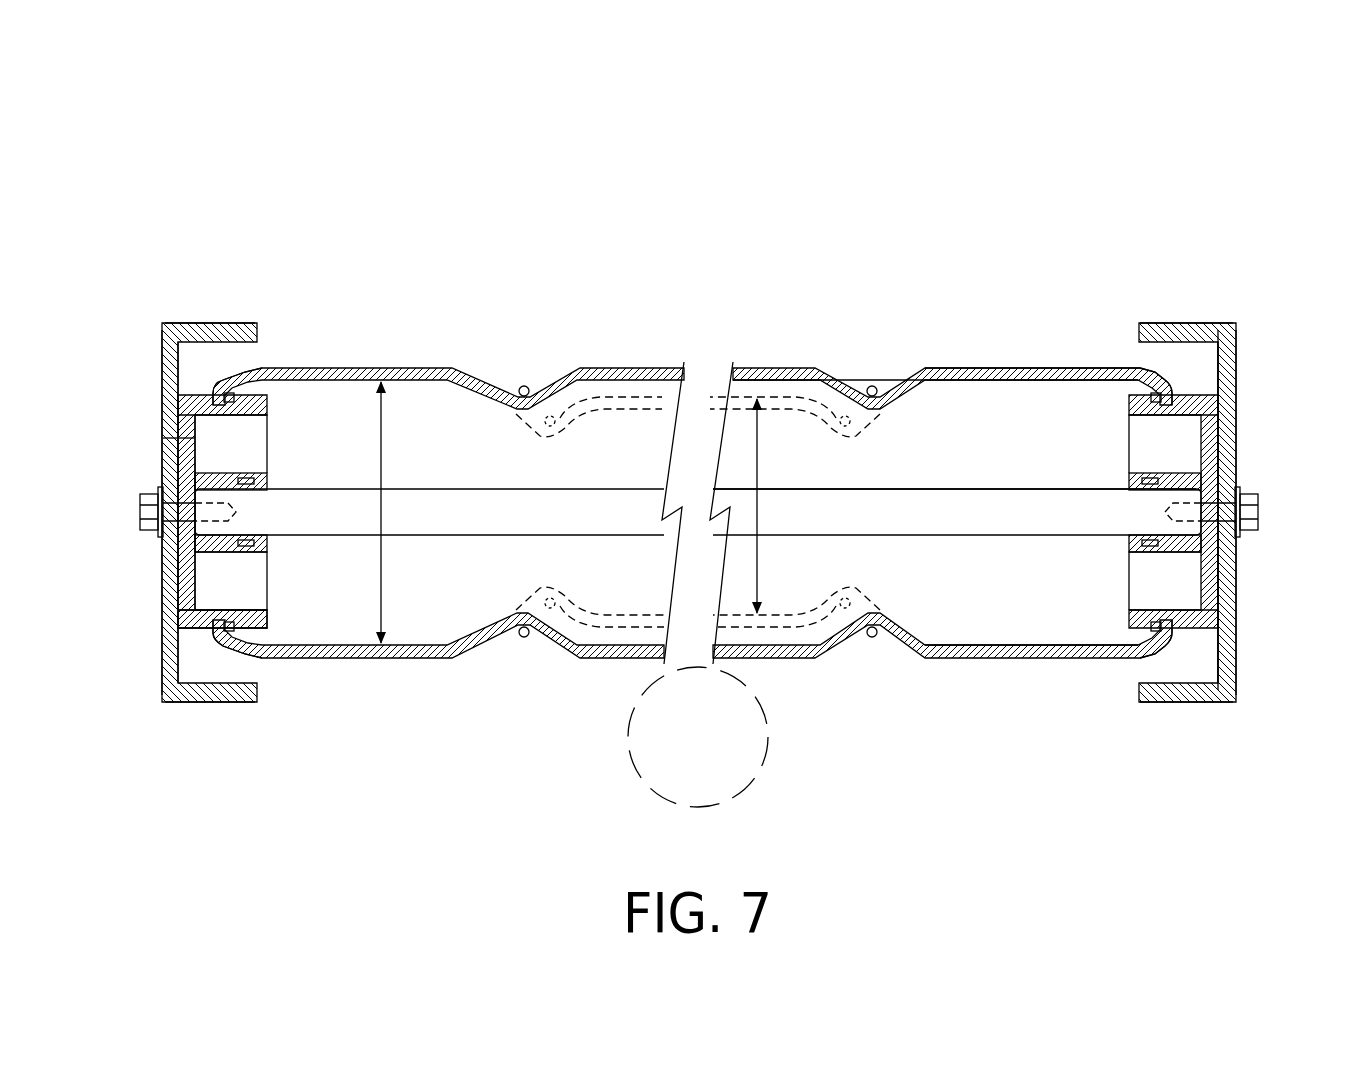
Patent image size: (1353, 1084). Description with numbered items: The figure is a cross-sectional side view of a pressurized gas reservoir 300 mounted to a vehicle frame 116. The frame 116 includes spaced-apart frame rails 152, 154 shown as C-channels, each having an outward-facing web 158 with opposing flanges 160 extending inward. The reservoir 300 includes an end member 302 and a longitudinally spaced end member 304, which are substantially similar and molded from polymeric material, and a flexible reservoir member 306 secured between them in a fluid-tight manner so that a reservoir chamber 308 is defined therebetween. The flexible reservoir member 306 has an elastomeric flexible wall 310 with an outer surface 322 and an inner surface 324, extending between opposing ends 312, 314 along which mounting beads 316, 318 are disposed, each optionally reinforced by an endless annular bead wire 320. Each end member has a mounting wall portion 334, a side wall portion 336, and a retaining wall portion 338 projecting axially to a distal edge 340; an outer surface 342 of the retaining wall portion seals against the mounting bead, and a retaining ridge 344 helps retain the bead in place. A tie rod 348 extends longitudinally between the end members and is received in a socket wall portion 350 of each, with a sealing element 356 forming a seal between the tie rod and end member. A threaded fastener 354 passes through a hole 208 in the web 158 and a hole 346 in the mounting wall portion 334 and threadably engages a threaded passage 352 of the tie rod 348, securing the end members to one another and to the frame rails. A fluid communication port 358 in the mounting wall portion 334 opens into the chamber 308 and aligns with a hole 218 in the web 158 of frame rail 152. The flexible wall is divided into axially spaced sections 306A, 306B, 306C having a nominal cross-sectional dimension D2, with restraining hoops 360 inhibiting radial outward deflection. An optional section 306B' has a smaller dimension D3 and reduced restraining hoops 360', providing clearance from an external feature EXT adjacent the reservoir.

The frame 116 is at (1197, 298).
The frame rail 152 is at (186, 323).
The frame rail 154 is at (1231, 323).
The web 158 is at (170, 592).
The flanges 160 is at (245, 323).
The hole 208 is at (1228, 530).
The hole 218 is at (163, 439).
The pressurized gas reservoir 300 is at (916, 278).
The end member 302 is at (174, 401).
The end member 304 is at (1222, 402).
The flexible reservoir member 306 is at (692, 440).
The section 306A is at (432, 362).
The section 306B is at (952, 359).
The section 306B' is at (698, 460).
The section 306C is at (1047, 360).
The reservoir chamber 308 is at (437, 616).
The flexible wall 310 is at (925, 368).
The end 312 is at (352, 309).
The end 314 is at (1087, 313).
The mounting bead 316 is at (240, 388).
The mounting bead 318 is at (1160, 380).
The bead wire 320 is at (238, 397).
The outer surface 322 is at (1015, 660).
The inner surface 324 is at (935, 655).
The mounting wall portion 334 is at (185, 570).
The side wall portion 336 is at (187, 625).
The retaining wall portion 338 is at (235, 611).
The distal edge 340 is at (268, 430).
The outer surface 342 is at (243, 640).
The retaining ridge 344 is at (240, 625).
The hole 346 is at (1233, 482).
The tie rod 348 is at (970, 488).
The socket wall portion 350 is at (228, 553).
The threaded passage 352 is at (240, 512).
The threaded fastener 354 is at (146, 508).
The sealing element 356 is at (268, 476).
The fluid communication port 358 is at (196, 438).
The restraining hoops 360 is at (724, 559).
The restraining hoops 360' is at (696, 512).
The nominal cross-sectional dimension D2 is at (383, 438).
The nominal cross-sectional dimension D3 is at (760, 440).
The external feature EXT is at (727, 803).